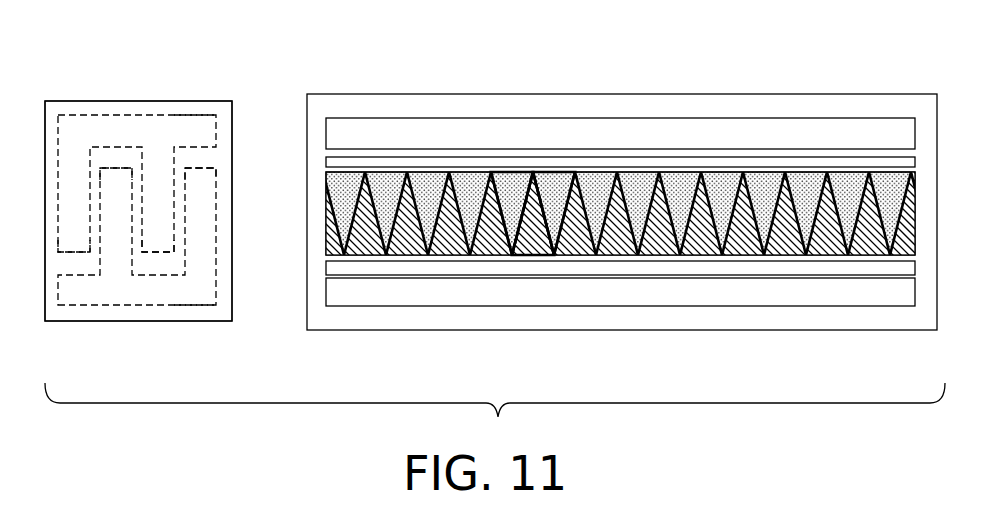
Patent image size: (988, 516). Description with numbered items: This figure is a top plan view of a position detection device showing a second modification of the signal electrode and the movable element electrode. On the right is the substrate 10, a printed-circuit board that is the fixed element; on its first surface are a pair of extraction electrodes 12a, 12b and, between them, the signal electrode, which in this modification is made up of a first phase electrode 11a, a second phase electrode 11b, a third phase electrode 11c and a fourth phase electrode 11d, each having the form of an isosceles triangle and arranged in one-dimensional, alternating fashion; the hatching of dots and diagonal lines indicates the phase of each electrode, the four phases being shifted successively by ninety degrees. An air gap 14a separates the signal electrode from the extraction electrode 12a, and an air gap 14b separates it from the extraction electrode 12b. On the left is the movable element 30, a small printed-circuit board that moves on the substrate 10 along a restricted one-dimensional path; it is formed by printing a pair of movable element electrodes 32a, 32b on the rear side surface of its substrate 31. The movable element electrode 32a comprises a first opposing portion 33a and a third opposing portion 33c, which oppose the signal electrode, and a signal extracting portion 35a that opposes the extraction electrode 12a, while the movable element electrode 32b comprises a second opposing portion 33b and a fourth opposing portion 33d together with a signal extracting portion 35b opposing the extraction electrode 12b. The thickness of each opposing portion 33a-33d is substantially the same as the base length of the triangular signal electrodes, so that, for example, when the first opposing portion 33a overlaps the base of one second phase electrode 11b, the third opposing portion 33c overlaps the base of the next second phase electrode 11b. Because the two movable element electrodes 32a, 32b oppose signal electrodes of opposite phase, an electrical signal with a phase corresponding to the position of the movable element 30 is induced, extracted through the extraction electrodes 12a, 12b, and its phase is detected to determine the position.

The substrate 10 is at (857, 94).
The first phase electrode 11a is at (490, 171).
The second phase electrode 11b is at (525, 171).
The third phase electrode 11c is at (543, 171).
The fourth phase electrode 11d is at (568, 171).
The extraction electrode 12a is at (383, 118).
The extraction electrode 12b is at (382, 306).
The air gap 14a is at (442, 157).
The air gap 14b is at (432, 275).
The movable element 30 is at (103, 84).
The substrate 31 is at (139, 101).
The movable element electrode 32a is at (158, 104).
The movable element electrode 32b is at (218, 262).
The first opposing portion 33a is at (72, 253).
The second opposing portion 33b is at (118, 167).
The third opposing portion 33c is at (158, 253).
The fourth opposing portion 33d is at (204, 167).
The signal extracting portion 35a is at (198, 115).
The signal extracting portion 35b is at (189, 305).